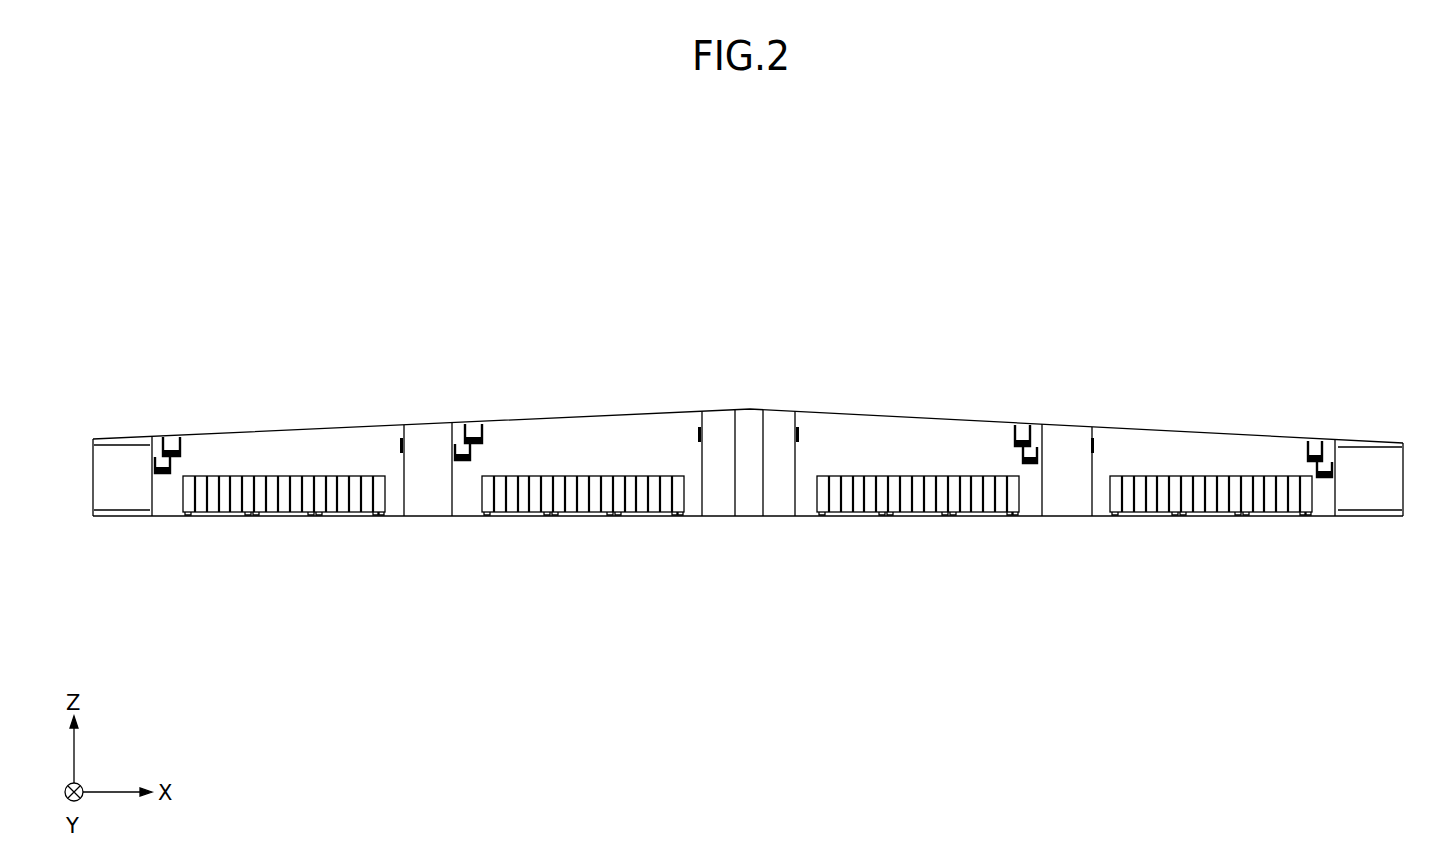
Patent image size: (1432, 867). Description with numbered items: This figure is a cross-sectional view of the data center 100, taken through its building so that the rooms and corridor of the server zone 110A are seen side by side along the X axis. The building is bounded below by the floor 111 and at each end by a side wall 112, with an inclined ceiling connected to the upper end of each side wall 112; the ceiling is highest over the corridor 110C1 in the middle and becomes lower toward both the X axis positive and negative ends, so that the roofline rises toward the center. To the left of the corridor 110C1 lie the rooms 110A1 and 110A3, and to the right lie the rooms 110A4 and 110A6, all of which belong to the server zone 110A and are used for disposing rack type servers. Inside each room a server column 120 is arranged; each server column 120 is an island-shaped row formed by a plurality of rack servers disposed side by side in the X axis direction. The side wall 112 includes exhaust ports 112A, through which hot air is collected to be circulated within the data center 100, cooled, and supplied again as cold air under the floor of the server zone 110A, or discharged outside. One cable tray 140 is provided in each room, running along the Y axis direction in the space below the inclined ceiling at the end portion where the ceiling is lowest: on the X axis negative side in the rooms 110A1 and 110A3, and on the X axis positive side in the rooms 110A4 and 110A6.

The data center 100 is at (1403, 285).
The server zone 110A is at (1198, 307).
The room 110A1 is at (350, 443).
The room 110A3 is at (550, 443).
The corridor 110C1 is at (746, 437).
The room 110A4 is at (921, 443).
The room 110A6 is at (1127, 443).
The floor 111 is at (226, 515).
The side wall 112 is at (170, 478).
The exhaust port 112A is at (400, 455).
The server column 120 is at (327, 495).
The cable tray 140 is at (170, 440).